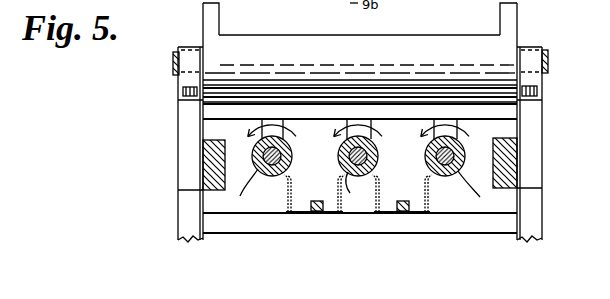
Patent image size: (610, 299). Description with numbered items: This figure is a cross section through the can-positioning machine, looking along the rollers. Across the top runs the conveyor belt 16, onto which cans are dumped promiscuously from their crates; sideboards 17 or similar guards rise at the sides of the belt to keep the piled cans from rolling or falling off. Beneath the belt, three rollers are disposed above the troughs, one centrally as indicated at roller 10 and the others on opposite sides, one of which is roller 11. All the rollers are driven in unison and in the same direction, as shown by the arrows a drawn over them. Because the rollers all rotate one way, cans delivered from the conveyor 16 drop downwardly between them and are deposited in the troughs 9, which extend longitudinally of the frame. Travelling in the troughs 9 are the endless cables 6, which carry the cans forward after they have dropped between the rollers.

The conveyor belt 16 is at (497, 52).
The sideboards 17 is at (208, 22).
The arrows a is at (313, 143).
The troughs 9 is at (288, 199).
The endless cables 6 is at (317, 201).
The roller 10 is at (486, 199).
The roller 11 is at (239, 197).